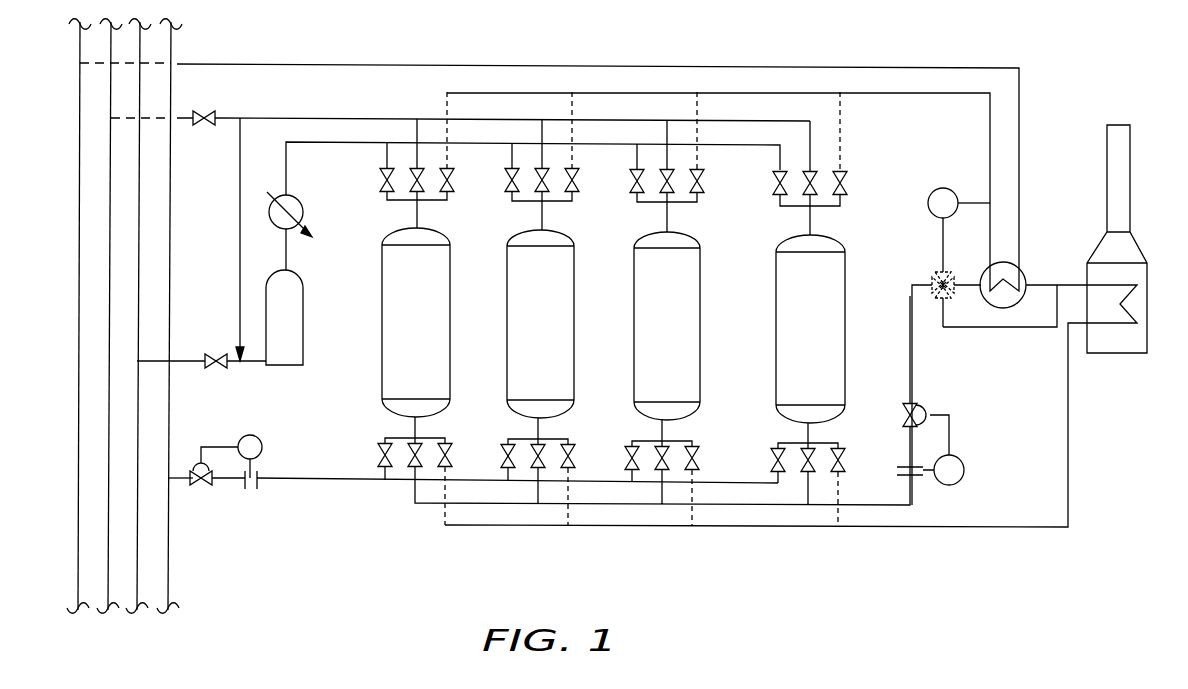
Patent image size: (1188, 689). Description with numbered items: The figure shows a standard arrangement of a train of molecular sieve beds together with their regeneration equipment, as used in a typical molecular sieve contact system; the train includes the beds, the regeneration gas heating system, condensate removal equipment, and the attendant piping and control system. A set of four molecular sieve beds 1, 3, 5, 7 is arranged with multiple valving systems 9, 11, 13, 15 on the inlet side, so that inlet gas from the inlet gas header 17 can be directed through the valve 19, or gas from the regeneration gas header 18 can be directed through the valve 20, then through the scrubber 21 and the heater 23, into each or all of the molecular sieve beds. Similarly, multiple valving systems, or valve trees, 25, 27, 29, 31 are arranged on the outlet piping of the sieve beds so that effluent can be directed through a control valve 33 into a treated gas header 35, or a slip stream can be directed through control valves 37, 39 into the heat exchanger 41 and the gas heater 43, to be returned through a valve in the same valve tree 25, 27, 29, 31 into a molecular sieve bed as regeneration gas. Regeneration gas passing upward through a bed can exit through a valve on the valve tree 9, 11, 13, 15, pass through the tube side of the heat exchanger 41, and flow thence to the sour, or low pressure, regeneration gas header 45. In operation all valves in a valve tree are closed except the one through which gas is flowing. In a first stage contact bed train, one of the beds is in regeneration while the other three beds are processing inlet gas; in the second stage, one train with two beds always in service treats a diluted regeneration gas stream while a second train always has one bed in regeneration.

The molecular sieve bed 1 is at (451, 246).
The molecular sieve bed 3 is at (576, 247).
The molecular sieve bed 5 is at (702, 249).
The molecular sieve bed 7 is at (846, 253).
The valving system 9 is at (455, 180).
The valving system 11 is at (580, 181).
The valving system 13 is at (706, 182).
The valving system 15 is at (848, 184).
The inlet gas header 17 is at (140, 199).
The regeneration gas header 18 is at (110, 142).
The valve 19 is at (218, 368).
The valve 20 is at (206, 111).
The scrubber 21 is at (303, 322).
The heater 23 is at (303, 212).
The valving system 25 is at (455, 458).
The valving system 27 is at (578, 459).
The valving system 29 is at (702, 461).
The valving system 31 is at (848, 463).
The control valve 33 is at (203, 490).
The treated gas header 35 is at (171, 247).
The control valve 37 is at (902, 406).
The control valve 39 is at (928, 276).
The heat exchanger 41 is at (1026, 283).
The gas heater 43 is at (1137, 240).
The regeneration gas header 45 is at (80, 108).